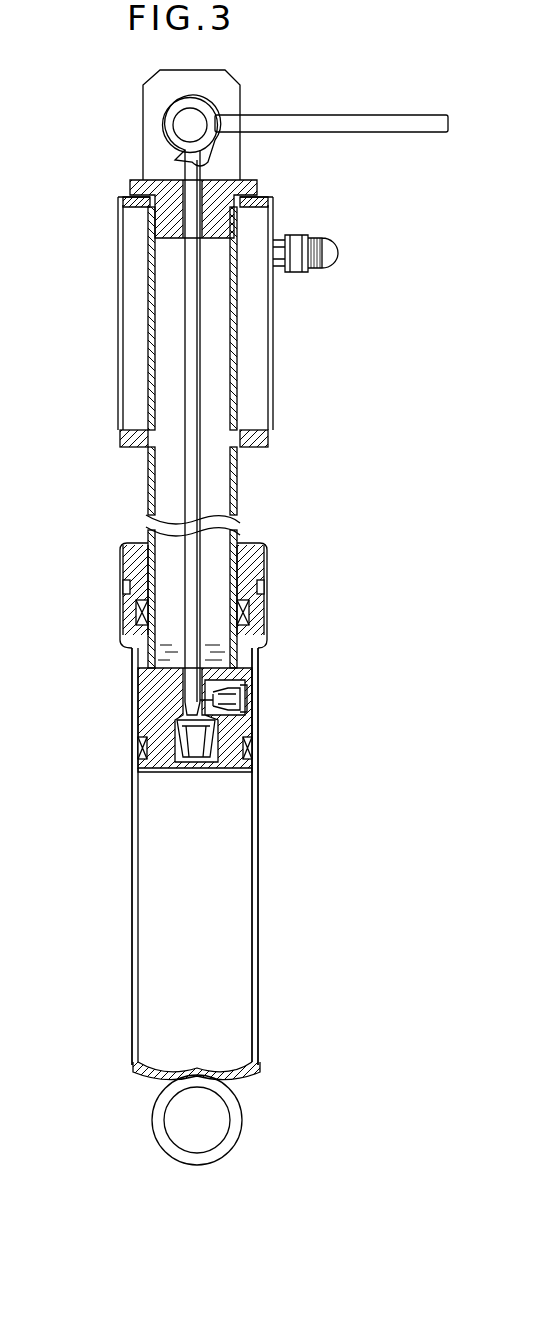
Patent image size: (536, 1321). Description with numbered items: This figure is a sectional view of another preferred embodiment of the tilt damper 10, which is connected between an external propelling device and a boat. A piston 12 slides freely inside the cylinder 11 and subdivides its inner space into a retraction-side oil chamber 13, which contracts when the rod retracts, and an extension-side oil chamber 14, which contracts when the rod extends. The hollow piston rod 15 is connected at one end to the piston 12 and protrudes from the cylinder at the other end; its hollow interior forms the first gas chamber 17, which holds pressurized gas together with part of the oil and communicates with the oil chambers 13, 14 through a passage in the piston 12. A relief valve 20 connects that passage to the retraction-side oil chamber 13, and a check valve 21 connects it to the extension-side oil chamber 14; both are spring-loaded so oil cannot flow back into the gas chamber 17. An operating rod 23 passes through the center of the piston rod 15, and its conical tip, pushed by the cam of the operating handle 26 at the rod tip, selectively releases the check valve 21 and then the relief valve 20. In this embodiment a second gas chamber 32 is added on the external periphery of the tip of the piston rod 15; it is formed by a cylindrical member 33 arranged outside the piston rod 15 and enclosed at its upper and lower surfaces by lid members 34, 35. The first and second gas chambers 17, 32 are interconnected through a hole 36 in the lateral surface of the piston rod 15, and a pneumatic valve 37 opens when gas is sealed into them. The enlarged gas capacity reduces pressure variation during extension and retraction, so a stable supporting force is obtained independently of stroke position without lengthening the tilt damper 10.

The tilt damper 10 is at (258, 786).
The cylinder 11 is at (134, 838).
The piston 12 is at (155, 703).
The retraction-side oil chamber 13 is at (248, 850).
The extension-side oil chamber 14 is at (140, 674).
The piston rod 15 is at (148, 495).
The gas chamber 17 is at (225, 478).
The relief valve 20 is at (176, 722).
The check valve 21 is at (233, 698).
The operating rod 23 is at (203, 507).
The operating handle 26 is at (345, 112).
The second gas chamber 32 is at (138, 372).
The cylindrical member 33 is at (118, 292).
The lid member 34 is at (125, 195).
The lid member 35 is at (130, 448).
The hole 36 is at (150, 247).
The pneumatic valve 37 is at (335, 252).